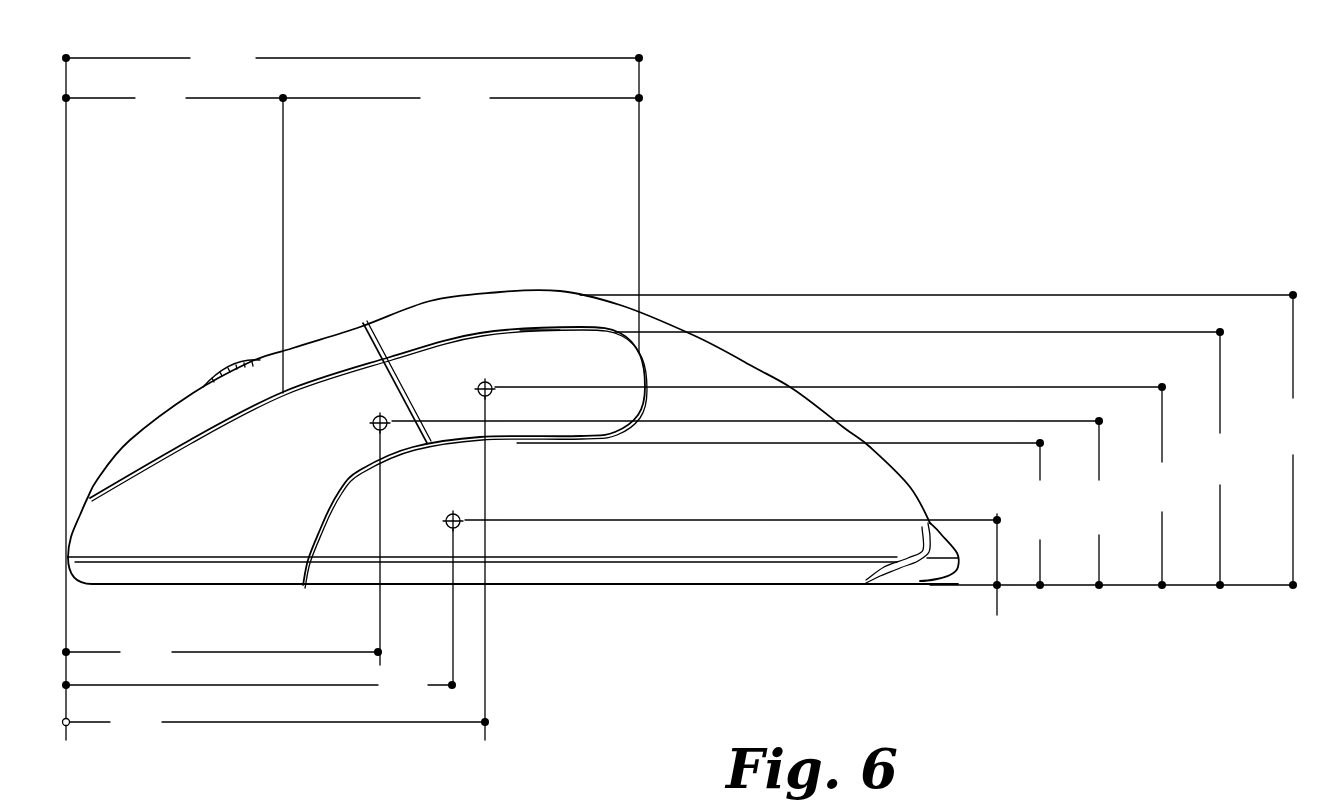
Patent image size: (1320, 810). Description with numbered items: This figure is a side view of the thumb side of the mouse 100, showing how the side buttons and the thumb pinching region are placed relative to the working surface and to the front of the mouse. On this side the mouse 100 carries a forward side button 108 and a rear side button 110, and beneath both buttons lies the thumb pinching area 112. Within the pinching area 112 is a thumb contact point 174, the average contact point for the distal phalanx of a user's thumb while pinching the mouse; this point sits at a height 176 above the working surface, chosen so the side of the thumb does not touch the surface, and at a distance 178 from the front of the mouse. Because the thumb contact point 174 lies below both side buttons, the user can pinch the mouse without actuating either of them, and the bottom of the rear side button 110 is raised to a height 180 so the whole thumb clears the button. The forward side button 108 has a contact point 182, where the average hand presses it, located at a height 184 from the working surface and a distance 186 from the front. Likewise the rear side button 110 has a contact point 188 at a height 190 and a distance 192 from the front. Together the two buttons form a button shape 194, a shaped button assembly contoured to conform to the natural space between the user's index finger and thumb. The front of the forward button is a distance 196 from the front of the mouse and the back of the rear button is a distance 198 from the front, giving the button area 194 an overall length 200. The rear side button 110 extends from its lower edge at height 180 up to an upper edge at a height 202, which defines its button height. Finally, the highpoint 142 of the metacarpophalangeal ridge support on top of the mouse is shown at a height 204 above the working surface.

The mouse 100 is at (539, 397).
The forward side button 108 is at (315, 428).
The rear side button 110 is at (545, 373).
The thumb pinching area 112 is at (425, 538).
The highpoint of metacarpophalangeal ridge support 142 is at (566, 297).
The thumb contact point 174 is at (461, 519).
The height of thumb contact point 176 is at (745, 582).
The distance of thumb contact point from front 178 is at (259, 615).
The height of bottom of rear side button 180 is at (791, 514).
The contact point of forward side button 182 is at (372, 410).
The height of forward button contact point 184 is at (759, 503).
The distance of forward button contact point from front 186 is at (222, 549).
The contact point of rear side button 188 is at (492, 382).
The height of rear button contact point 190 is at (844, 486).
The distance of rear button contact point from front 192 is at (276, 568).
The button shape 194 is at (433, 325).
The distance of front of forward button from front 196 is at (174, 238).
The distance of back of rear button from front 198 is at (352, 392).
The length of button area 200 is at (463, 205).
The height of upper edge of rear side button 202 is at (930, 458).
The height of ridge support highpoint 204 is at (949, 440).